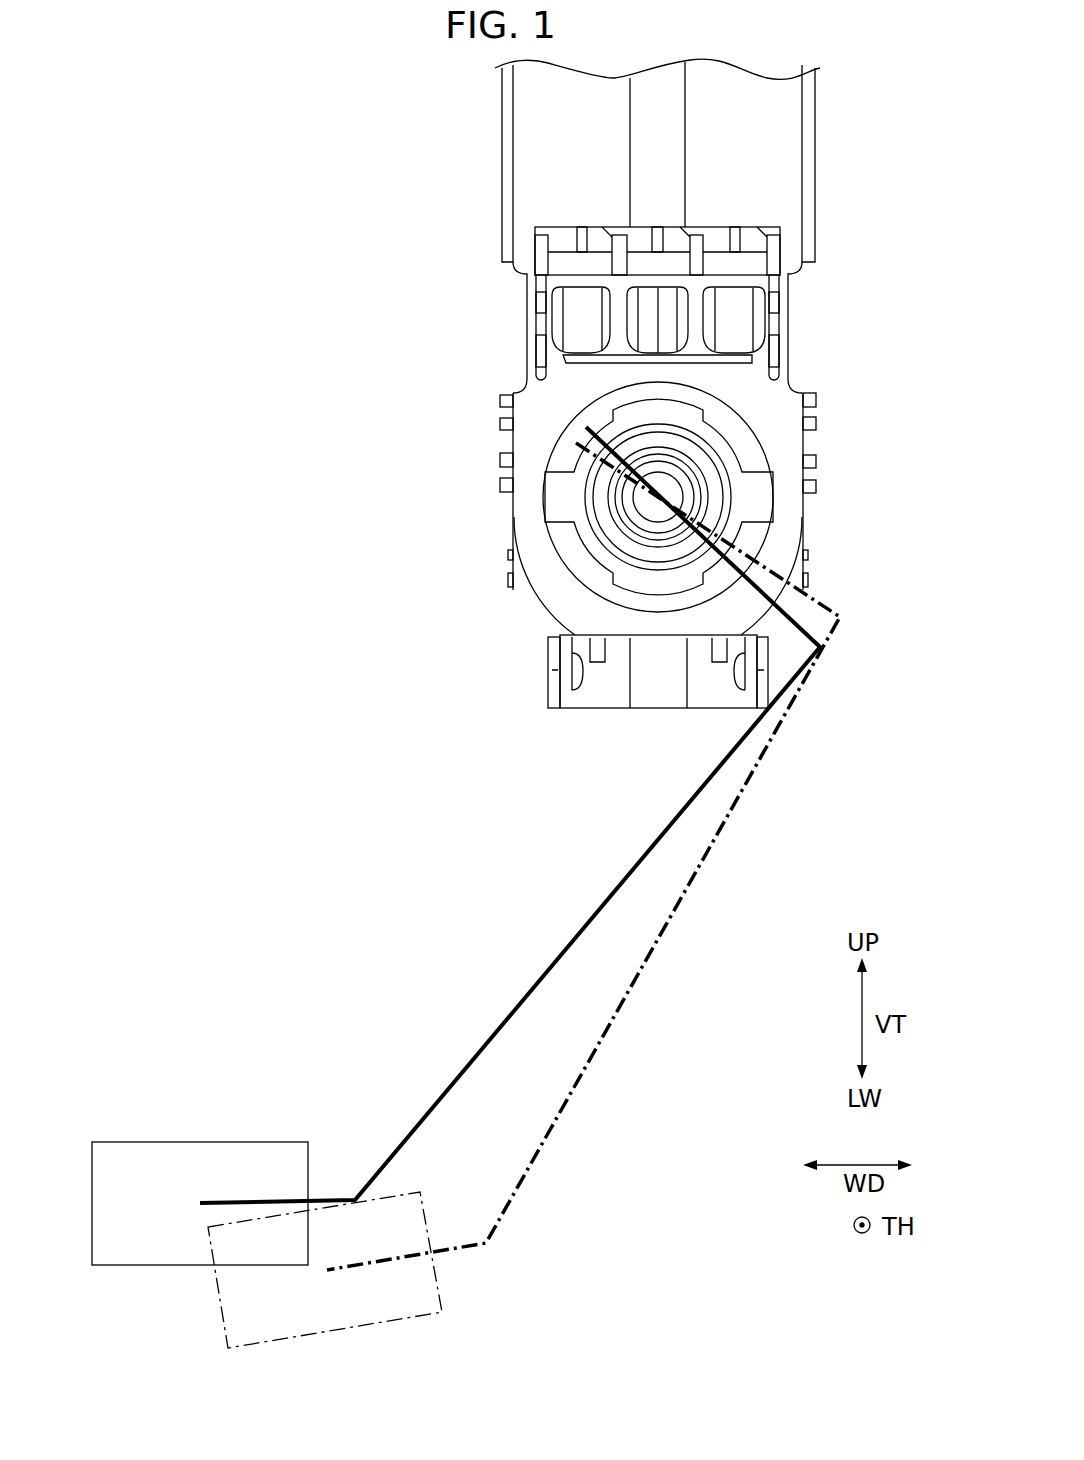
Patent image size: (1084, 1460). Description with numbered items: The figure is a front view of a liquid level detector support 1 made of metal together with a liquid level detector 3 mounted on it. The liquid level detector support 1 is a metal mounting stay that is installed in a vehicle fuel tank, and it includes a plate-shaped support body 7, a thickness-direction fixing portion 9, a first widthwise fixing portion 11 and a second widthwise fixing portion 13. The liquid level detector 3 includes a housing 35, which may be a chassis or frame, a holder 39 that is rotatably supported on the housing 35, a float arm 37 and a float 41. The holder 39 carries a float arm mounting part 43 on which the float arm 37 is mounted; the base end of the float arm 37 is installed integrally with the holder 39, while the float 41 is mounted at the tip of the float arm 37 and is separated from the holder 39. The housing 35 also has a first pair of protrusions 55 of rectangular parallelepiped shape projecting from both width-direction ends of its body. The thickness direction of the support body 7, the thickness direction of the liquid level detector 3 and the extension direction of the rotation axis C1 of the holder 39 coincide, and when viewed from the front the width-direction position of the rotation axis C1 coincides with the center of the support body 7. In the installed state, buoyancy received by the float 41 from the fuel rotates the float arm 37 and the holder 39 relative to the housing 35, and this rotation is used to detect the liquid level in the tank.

The liquid level detector support 1 is at (822, 172).
The support body 7 is at (792, 324).
The liquid level detector 3 is at (552, 408).
The first widthwise fixing portion 11 is at (497, 413).
The second widthwise fixing portion 13 is at (822, 403).
The thickness-direction fixing portion 9 is at (822, 471).
The float arm mounting part 43 is at (672, 486).
The rotation axis C1 is at (656, 497).
The housing 35 is at (790, 532).
The first pair of protrusions 55 is at (612, 533).
The holder 39 is at (645, 528).
The float arm 37 is at (556, 958).
The float 41 is at (207, 1142).